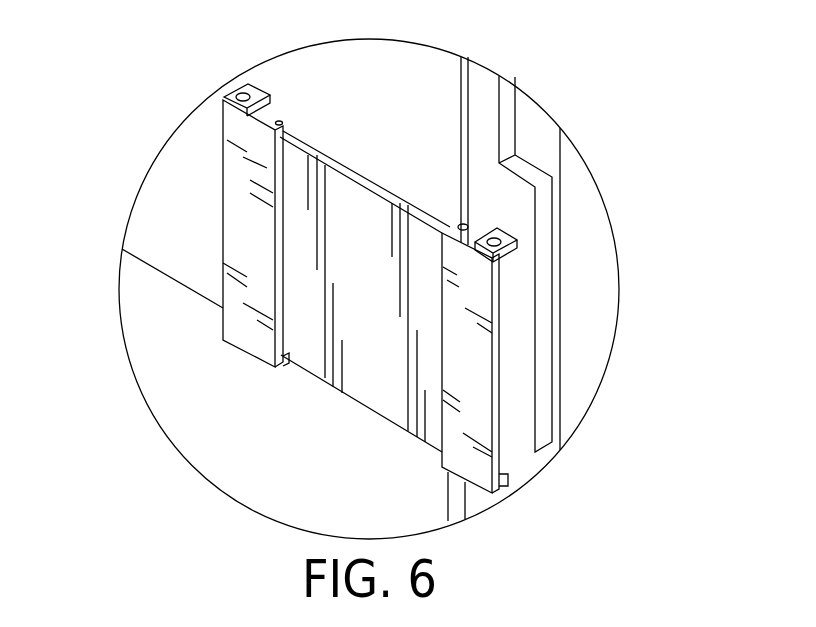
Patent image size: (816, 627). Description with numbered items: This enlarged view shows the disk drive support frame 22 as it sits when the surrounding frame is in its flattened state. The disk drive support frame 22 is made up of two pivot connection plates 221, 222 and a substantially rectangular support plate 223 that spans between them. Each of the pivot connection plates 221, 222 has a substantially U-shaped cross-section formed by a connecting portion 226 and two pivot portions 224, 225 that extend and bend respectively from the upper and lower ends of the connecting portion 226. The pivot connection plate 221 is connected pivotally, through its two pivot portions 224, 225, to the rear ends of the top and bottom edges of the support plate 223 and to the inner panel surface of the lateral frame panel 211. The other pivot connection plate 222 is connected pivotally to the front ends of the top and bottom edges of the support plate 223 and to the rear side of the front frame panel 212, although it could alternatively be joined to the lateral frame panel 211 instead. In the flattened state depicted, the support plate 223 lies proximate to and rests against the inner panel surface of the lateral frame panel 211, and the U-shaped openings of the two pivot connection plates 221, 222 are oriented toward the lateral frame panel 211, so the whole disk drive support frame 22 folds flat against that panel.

The lateral frame panel 211 is at (408, 72).
The front frame panel 212 is at (597, 268).
The disk drive support frame 22 is at (371, 293).
The pivot connection plate 221 is at (247, 155).
The pivot connection plate 222 is at (498, 403).
The support plate 223 is at (408, 380).
The pivot portion 224 is at (265, 113).
The pivot portion 225 is at (283, 364).
The connecting portion 226 is at (247, 222).